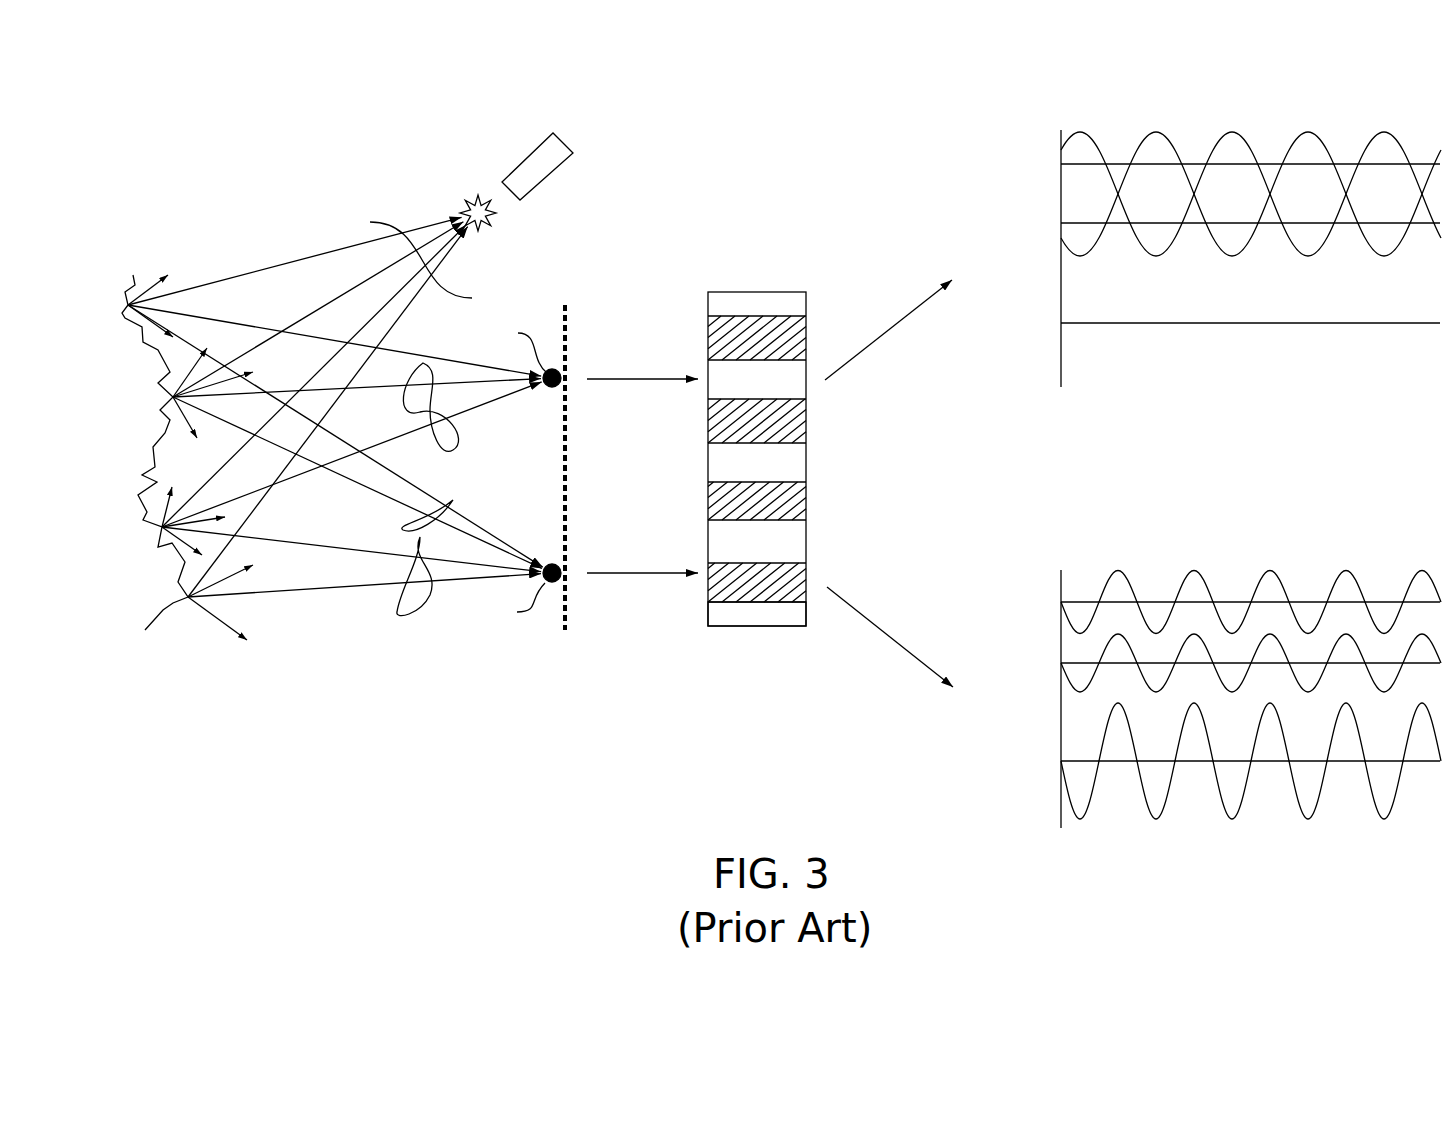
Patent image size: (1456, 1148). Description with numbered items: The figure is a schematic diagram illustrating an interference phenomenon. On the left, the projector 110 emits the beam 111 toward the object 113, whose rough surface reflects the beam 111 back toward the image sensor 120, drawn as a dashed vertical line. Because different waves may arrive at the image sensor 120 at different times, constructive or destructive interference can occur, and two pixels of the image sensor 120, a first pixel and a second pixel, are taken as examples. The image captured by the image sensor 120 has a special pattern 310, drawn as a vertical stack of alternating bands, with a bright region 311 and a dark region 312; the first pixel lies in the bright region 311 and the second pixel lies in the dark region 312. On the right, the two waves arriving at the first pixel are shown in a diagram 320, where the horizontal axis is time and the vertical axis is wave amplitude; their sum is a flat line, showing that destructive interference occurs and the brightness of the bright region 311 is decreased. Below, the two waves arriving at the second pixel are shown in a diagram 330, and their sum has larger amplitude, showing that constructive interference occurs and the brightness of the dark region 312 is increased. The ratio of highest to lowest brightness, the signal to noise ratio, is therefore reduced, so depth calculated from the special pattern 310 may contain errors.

The projector 110 is at (522, 162).
The beam 111 is at (418, 228).
The object 113 is at (120, 462).
The image sensor 120 is at (565, 655).
The special pattern 310 is at (774, 452).
The bright region 311 is at (777, 377).
The dark region 312 is at (770, 592).
The diagram 320 is at (1047, 102).
The diagram 330 is at (1048, 835).